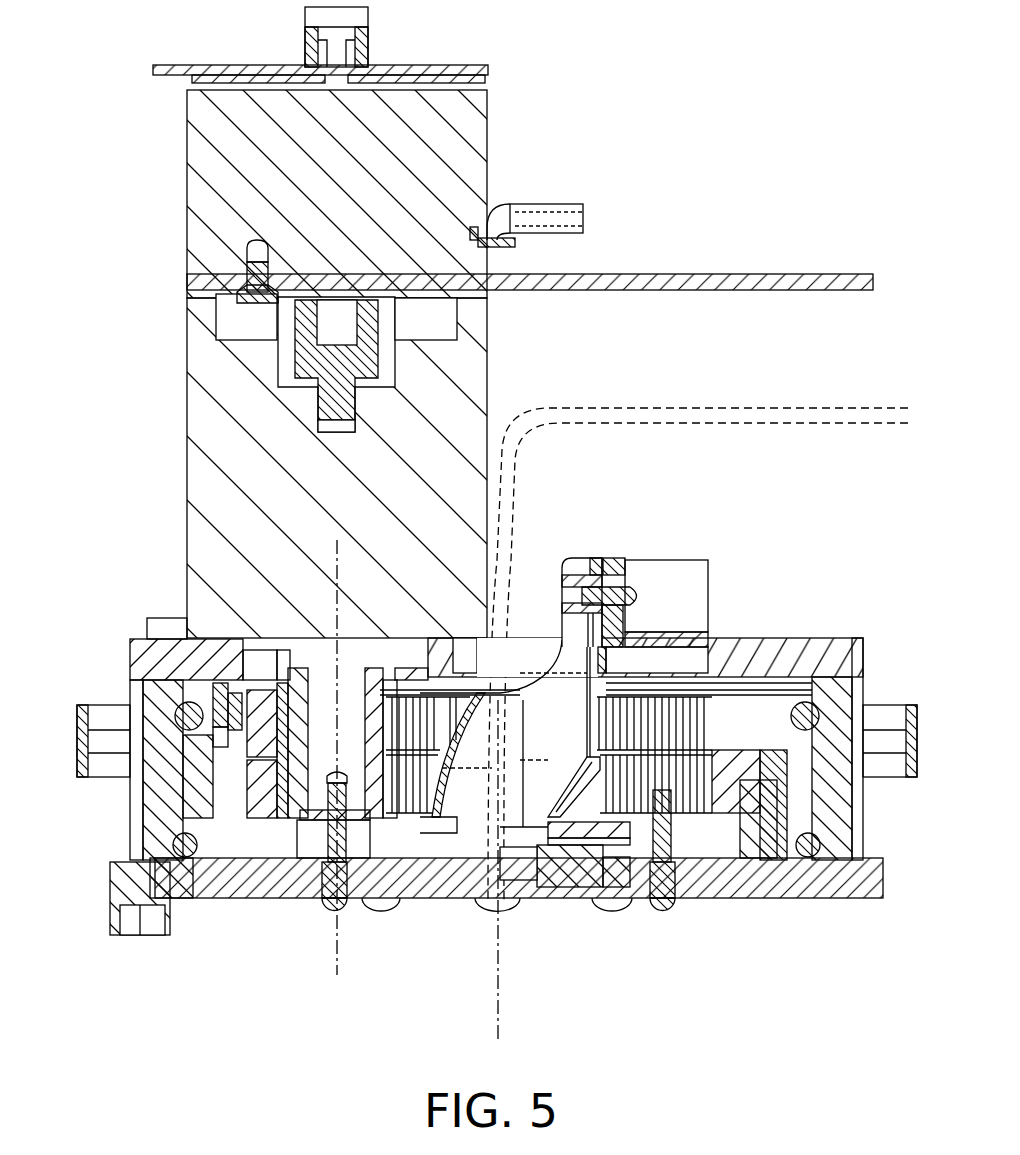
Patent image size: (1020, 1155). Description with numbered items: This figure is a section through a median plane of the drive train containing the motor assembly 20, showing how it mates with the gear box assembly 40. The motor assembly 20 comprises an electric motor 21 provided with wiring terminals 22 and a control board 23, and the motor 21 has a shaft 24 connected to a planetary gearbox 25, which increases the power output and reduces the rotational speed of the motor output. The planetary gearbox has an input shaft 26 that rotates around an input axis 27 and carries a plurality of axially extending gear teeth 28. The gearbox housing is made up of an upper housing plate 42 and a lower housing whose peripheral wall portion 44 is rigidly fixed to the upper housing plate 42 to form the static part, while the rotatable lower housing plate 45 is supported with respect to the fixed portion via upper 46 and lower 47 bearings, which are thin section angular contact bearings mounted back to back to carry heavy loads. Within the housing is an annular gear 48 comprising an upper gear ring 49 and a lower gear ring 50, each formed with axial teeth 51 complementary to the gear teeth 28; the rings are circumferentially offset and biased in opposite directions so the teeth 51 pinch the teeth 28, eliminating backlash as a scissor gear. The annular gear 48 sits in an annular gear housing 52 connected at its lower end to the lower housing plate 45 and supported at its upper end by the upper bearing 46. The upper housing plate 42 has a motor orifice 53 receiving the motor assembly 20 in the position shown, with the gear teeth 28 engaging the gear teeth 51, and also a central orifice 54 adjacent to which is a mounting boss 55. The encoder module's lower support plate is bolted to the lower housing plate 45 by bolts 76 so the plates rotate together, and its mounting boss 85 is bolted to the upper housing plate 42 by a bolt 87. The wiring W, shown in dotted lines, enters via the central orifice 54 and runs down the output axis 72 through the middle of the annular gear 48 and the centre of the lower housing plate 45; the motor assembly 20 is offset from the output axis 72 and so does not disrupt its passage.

The motor assembly 20 is at (143, 418).
The electric motor 21 is at (480, 120).
The wiring terminals 22 is at (522, 204).
The control board 23 is at (748, 274).
The shaft 24 is at (325, 365).
The planetary gearbox 25 is at (220, 503).
The input shaft 26 is at (310, 713).
The input axis 27 is at (345, 935).
The gear teeth 28 is at (265, 898).
The gear box assembly 40 is at (62, 745).
The upper housing plate 42 is at (832, 655).
The peripheral wall portion 44 is at (838, 790).
The lower housing plate 45 is at (765, 898).
The upper bearing 46 is at (168, 712).
The lower bearing 47 is at (143, 812).
The annular gear 48 is at (728, 712).
The upper gear ring 49 is at (700, 690).
The lower gear ring 50 is at (705, 898).
The axial teeth 51 is at (672, 710).
The annular gear housing 52 is at (200, 898).
The motor orifice 53 is at (225, 652).
The central orifice 54 is at (522, 652).
The mounting boss 55 is at (614, 567).
The output axis 72 is at (505, 995).
The bolts 76 is at (330, 915).
The mounting boss 85 is at (582, 562).
The bolt 87 is at (642, 590).
The wiring W is at (768, 408).